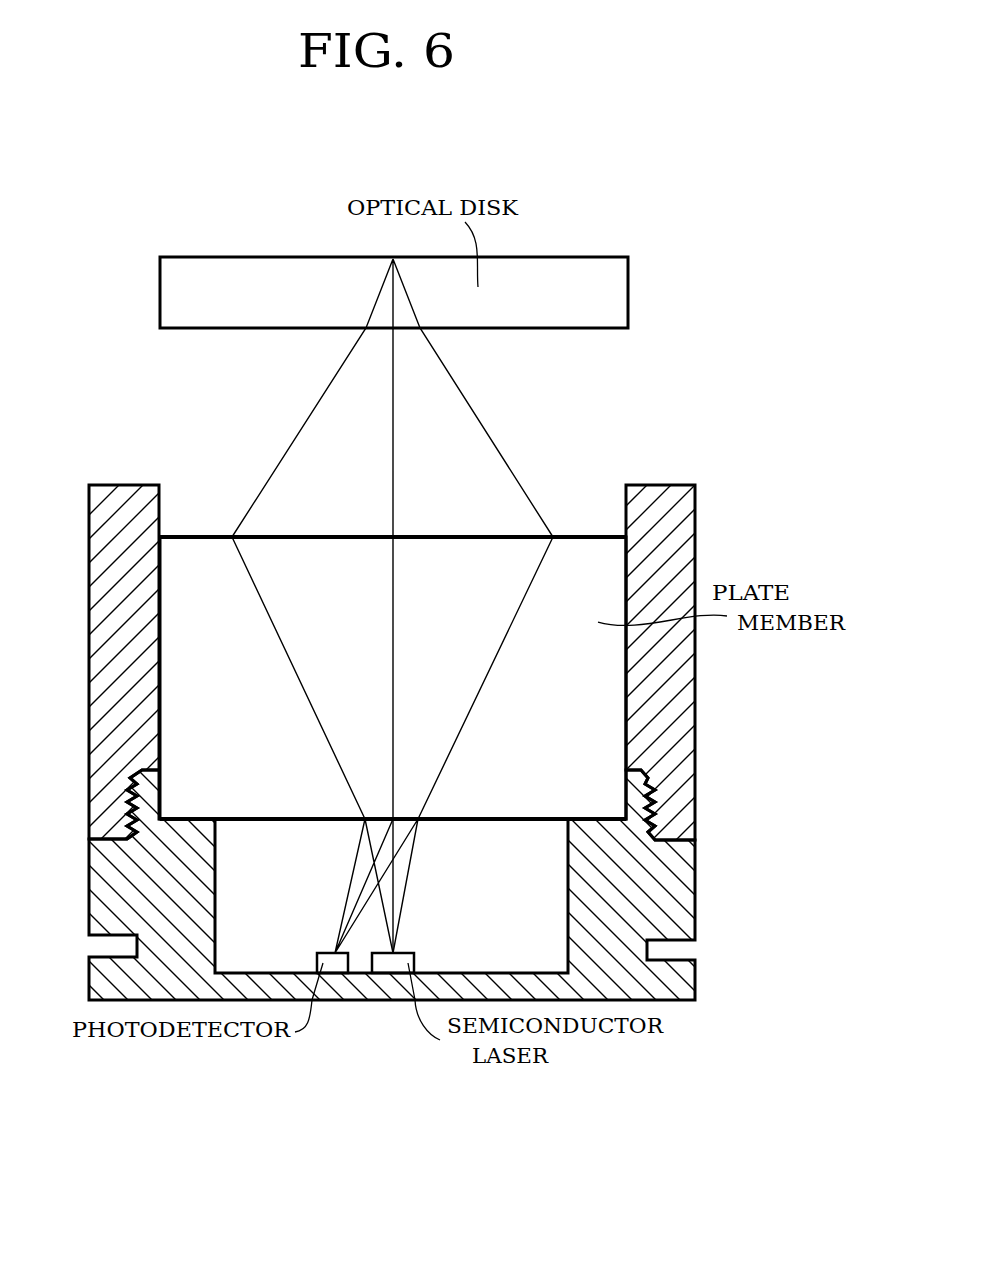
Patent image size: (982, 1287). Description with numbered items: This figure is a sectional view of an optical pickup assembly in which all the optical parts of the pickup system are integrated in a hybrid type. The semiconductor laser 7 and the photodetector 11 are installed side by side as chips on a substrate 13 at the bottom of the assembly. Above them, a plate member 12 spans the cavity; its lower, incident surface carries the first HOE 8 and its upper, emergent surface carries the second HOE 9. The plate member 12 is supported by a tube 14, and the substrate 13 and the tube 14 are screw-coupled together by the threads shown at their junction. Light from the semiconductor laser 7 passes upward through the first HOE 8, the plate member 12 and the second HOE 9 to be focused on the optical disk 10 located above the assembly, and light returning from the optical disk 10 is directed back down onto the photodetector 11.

The semiconductor laser 7 is at (405, 963).
The first HOE 8 is at (482, 820).
The second HOE 9 is at (594, 535).
The optical disk 10 is at (570, 275).
The photodetector 11 is at (332, 963).
The plate member 12 is at (598, 673).
The substrate 13 is at (678, 905).
The tube 14 is at (700, 745).